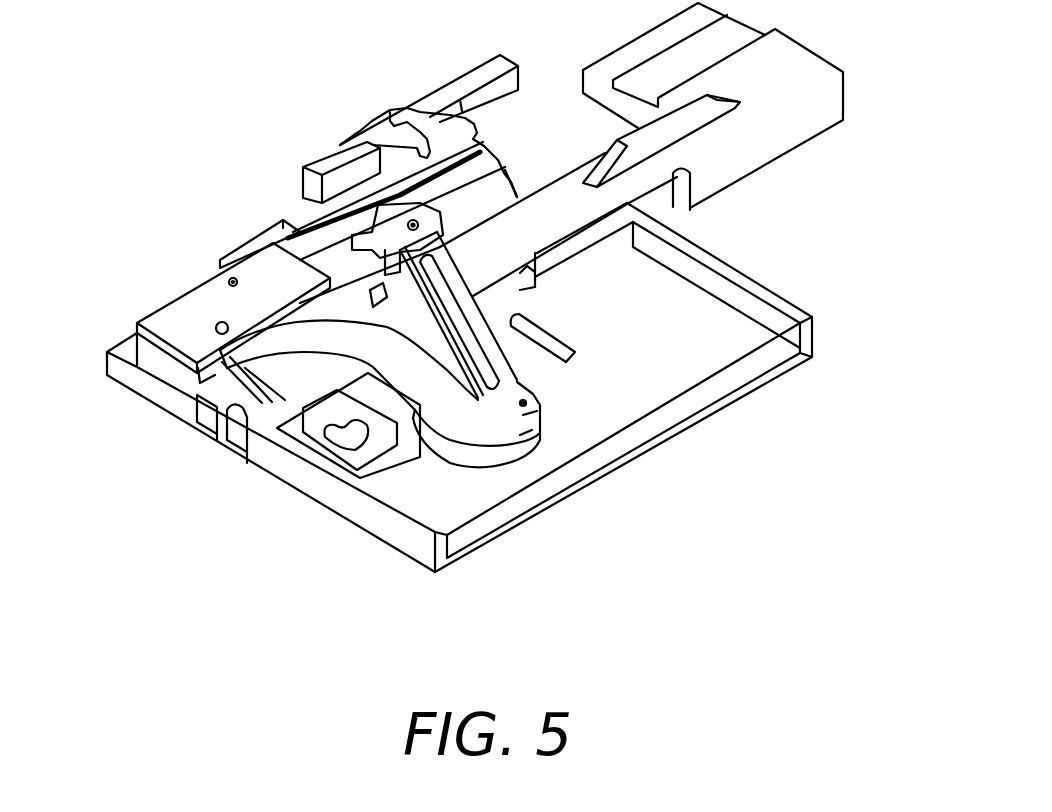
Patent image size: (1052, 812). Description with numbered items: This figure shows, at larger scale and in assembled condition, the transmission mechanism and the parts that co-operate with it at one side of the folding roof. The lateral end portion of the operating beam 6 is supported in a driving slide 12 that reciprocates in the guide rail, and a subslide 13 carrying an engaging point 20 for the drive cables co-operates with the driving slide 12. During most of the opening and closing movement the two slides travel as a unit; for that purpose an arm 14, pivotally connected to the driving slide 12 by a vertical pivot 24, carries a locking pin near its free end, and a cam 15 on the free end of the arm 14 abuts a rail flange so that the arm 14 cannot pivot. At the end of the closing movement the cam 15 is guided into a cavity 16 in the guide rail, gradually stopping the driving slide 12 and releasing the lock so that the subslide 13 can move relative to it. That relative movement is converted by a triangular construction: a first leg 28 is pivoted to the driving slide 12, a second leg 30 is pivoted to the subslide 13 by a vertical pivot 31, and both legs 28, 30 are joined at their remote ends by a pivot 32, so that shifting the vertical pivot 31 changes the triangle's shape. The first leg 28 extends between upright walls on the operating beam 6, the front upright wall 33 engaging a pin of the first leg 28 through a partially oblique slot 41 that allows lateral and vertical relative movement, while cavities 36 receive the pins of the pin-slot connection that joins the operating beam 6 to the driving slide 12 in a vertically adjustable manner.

The operating beam 6 is at (758, 355).
The driving slide 12 is at (738, 160).
The subslide 13 is at (360, 232).
The arm 14 is at (367, 207).
The cam 15 is at (428, 117).
The cavity 16 is at (393, 110).
The engaging point 20 is at (250, 240).
The vertical pivot 24 is at (228, 280).
The first leg 28 is at (310, 337).
The second leg 30 is at (497, 370).
The vertical pivot 31 is at (409, 219).
The pivot 32 is at (540, 407).
The upright wall 33 is at (397, 413).
The cavities 36 is at (565, 358).
The slot 41 is at (347, 440).